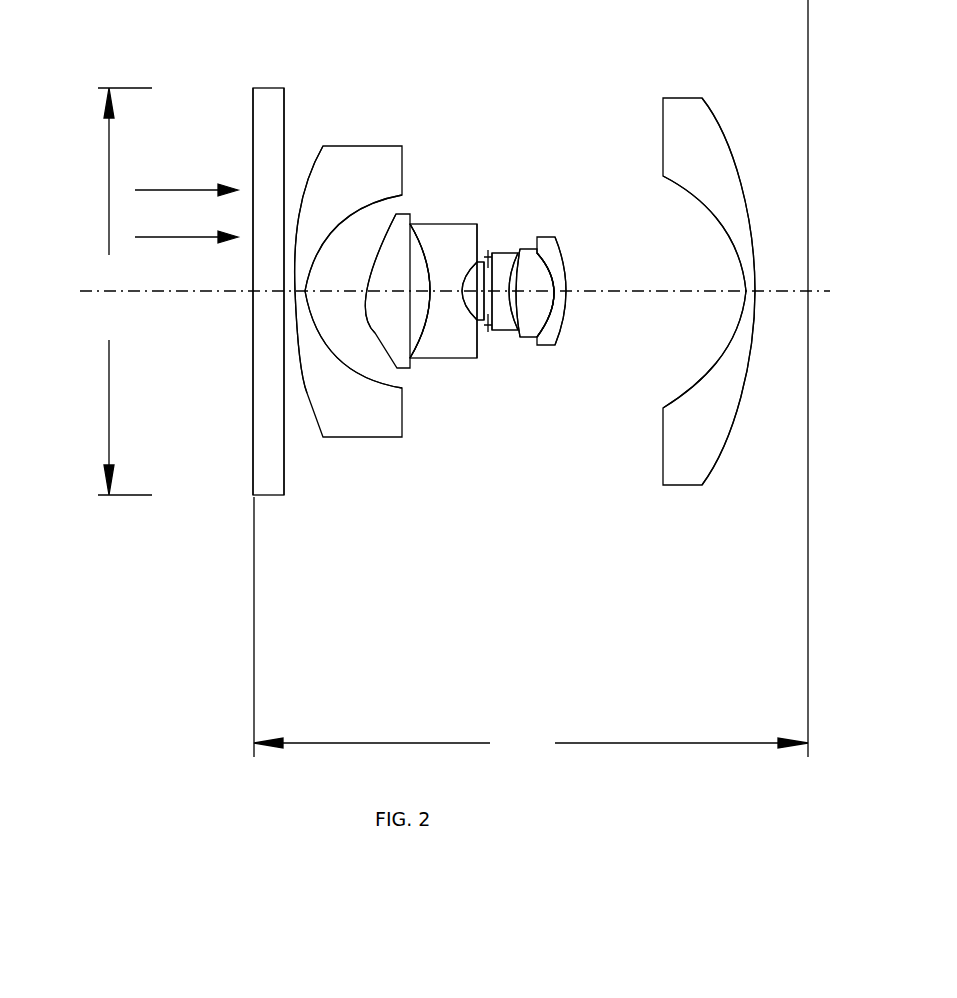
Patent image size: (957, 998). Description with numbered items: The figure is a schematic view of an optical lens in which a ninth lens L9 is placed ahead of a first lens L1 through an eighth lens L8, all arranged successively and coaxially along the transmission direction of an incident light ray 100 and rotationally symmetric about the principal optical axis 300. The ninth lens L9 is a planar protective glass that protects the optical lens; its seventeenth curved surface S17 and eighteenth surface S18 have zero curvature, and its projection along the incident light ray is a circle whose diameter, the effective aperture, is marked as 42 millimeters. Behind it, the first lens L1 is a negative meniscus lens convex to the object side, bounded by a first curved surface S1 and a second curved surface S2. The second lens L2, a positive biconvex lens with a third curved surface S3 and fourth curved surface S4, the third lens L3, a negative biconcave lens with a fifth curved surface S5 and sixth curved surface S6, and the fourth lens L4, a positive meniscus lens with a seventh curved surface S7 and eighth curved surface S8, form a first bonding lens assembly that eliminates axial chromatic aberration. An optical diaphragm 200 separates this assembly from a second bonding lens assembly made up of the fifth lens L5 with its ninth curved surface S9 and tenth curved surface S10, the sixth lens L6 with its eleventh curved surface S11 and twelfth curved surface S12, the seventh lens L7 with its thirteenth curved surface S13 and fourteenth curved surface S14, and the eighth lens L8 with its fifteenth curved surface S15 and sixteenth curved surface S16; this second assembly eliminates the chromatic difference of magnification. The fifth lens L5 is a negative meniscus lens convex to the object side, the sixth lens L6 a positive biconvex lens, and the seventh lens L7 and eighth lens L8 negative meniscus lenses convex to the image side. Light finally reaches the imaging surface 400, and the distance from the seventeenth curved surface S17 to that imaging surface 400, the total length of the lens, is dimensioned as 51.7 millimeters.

The incident light ray 100 is at (186, 199).
The optical diaphragm 200 is at (488, 256).
The principal optical axis 300 is at (83, 290).
The imaging surface 400 is at (808, 70).
The effective aperture diameter 42 is at (125, 291).
The total length 51.7 is at (531, 627).
The first lens L1 is at (337, 146).
The second lens L2 is at (403, 213).
The third lens L3 is at (418, 224).
The fourth lens L4 is at (472, 265).
The fifth lens L5 is at (502, 277).
The sixth lens L6 is at (532, 263).
The seventh lens L7 is at (557, 267).
The eighth lens L8 is at (663, 98).
The ninth lens L9 is at (272, 88).
The first curved surface S1 is at (307, 393).
The second curved surface S2 is at (313, 330).
The third curved surface S3 is at (375, 333).
The fourth curved surface S4 is at (422, 340).
The fifth curved surface S5 is at (422, 340).
The sixth curved surface S6 is at (462, 307).
The seventh curved surface S7 is at (462, 307).
The eighth curved surface S8 is at (492, 300).
The ninth curved surface S9 is at (515, 300).
The tenth curved surface S10 is at (522, 305).
The eleventh curved surface S11 is at (522, 305).
The twelfth curved surface S12 is at (553, 340).
The thirteenth curved surface S13 is at (553, 340).
The fourteenth curved surface S14 is at (570, 302).
The fifteenth curved surface S15 is at (690, 393).
The sixteenth curved surface S16 is at (735, 417).
The seventeenth curved surface S17 is at (253, 490).
The eighteenth surface S18 is at (284, 490).